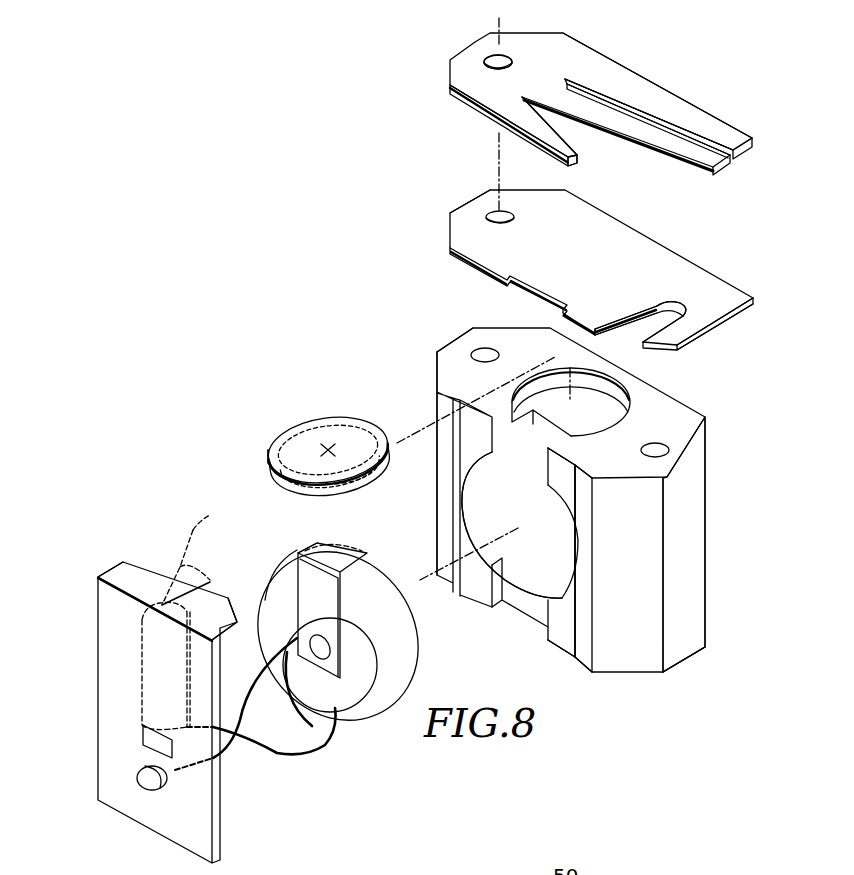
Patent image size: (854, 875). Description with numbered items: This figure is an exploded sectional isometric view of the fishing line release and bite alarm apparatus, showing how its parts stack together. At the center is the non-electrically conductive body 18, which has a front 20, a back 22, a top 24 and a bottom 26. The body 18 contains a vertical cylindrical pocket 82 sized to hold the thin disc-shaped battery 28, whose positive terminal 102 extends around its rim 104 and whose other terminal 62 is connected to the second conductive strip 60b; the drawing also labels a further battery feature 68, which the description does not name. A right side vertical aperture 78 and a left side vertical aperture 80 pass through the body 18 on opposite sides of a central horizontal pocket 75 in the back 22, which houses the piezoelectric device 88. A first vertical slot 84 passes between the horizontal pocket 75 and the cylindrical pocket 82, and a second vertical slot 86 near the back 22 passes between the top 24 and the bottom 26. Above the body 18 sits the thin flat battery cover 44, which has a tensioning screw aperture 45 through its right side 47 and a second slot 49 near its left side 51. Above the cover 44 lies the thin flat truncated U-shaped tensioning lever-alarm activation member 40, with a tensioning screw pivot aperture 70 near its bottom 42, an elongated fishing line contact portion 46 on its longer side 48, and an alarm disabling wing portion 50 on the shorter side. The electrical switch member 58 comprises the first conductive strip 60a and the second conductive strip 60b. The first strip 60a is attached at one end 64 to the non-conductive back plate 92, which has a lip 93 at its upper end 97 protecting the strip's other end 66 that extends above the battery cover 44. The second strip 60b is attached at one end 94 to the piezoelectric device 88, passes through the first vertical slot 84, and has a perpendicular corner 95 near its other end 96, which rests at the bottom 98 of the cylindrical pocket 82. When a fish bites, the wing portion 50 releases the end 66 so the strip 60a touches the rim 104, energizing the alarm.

The body 18 is at (705, 490).
The front 20 is at (680, 398).
The back 22 is at (582, 655).
The top 24 is at (450, 345).
The bottom 26 is at (677, 665).
The battery 28 is at (300, 422).
The tensioning lever-alarm activation member 40 is at (672, 100).
The bottom 42 is at (502, 50).
The battery cover 44 is at (622, 228).
The battery cover tensioning screw aperture 45 is at (514, 217).
The fishing line contact portion 46 is at (622, 76).
The right side 47 is at (462, 207).
The longer side 48 is at (590, 60).
The second slot 49 is at (637, 325).
The alarm disabling wing portion 50 is at (548, 136).
The left side 51 is at (705, 305).
The electrical switch member 58 is at (297, 550).
The first conductive strip 60a is at (142, 660).
The second conductive strip 60b is at (360, 560).
The terminal 62 is at (366, 492).
The one end 64 is at (143, 712).
The other end 66 is at (192, 588).
The rim of disc 68 is at (270, 463).
The tensioning screw pivot aperture 70 is at (488, 58).
The central horizontal pocket 75 is at (523, 580).
The right side vertical aperture 78 is at (488, 352).
The left side vertical aperture 80 is at (655, 447).
The vertical cylindrical pocket 82 is at (548, 385).
The first vertical slot 84 is at (528, 428).
The second vertical slot 86 is at (563, 468).
The piezoelectric device 88 is at (375, 705).
The back plate 92 is at (122, 805).
The lip 93 is at (237, 622).
The one end 94 is at (333, 640).
The perpendicular corner 95 is at (297, 549).
The other end 96 is at (323, 536).
The upper end 97 is at (98, 590).
The bottom 98 is at (626, 330).
The positive terminal 102 is at (330, 446).
The rim 104 is at (268, 452).